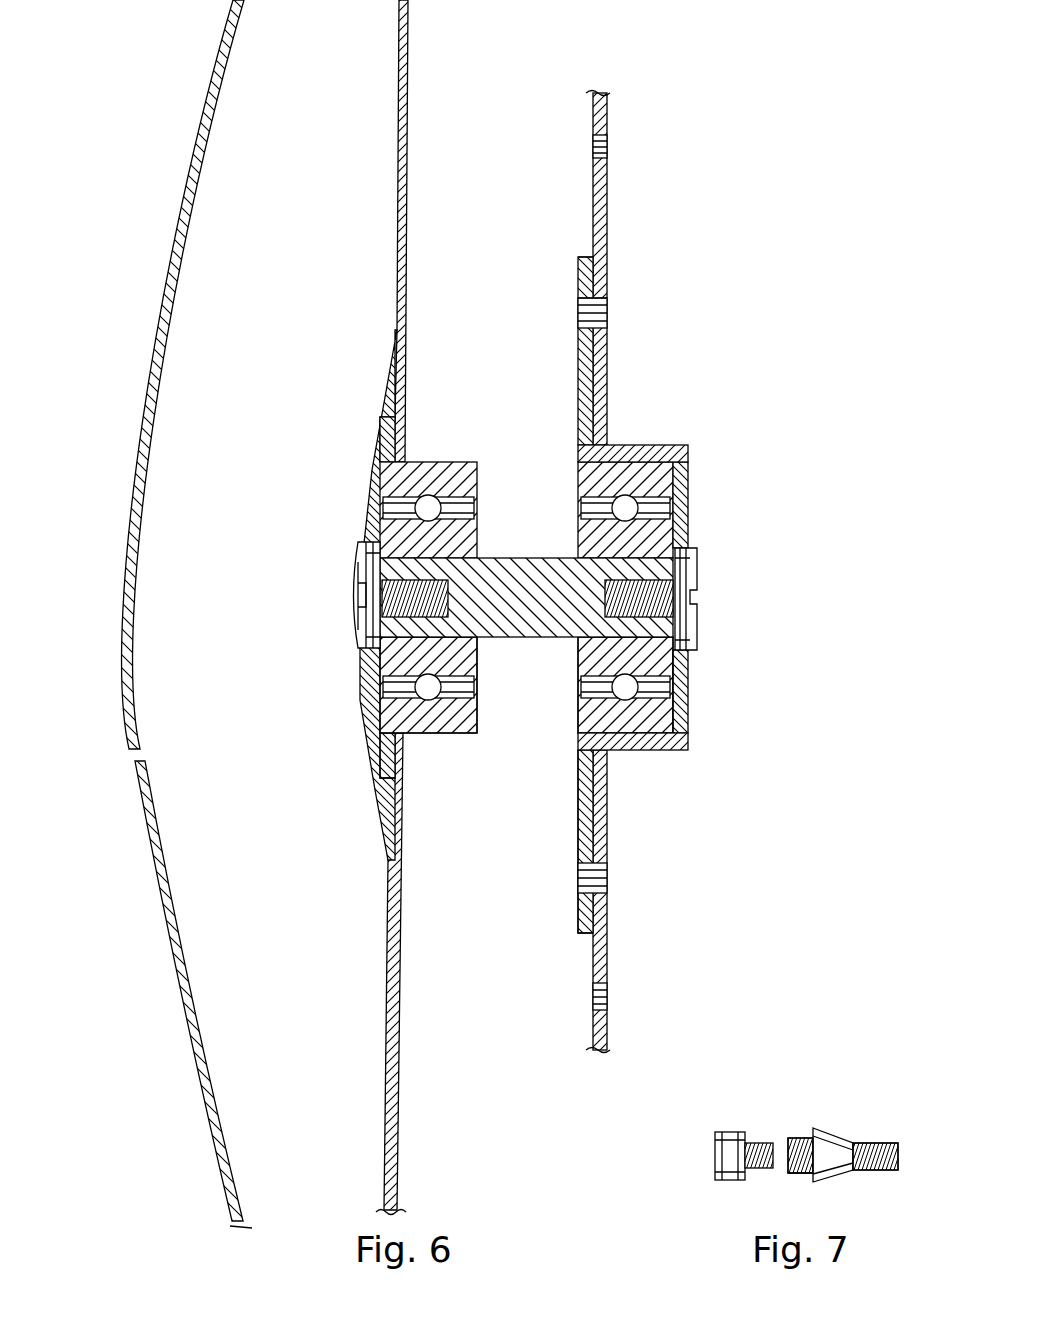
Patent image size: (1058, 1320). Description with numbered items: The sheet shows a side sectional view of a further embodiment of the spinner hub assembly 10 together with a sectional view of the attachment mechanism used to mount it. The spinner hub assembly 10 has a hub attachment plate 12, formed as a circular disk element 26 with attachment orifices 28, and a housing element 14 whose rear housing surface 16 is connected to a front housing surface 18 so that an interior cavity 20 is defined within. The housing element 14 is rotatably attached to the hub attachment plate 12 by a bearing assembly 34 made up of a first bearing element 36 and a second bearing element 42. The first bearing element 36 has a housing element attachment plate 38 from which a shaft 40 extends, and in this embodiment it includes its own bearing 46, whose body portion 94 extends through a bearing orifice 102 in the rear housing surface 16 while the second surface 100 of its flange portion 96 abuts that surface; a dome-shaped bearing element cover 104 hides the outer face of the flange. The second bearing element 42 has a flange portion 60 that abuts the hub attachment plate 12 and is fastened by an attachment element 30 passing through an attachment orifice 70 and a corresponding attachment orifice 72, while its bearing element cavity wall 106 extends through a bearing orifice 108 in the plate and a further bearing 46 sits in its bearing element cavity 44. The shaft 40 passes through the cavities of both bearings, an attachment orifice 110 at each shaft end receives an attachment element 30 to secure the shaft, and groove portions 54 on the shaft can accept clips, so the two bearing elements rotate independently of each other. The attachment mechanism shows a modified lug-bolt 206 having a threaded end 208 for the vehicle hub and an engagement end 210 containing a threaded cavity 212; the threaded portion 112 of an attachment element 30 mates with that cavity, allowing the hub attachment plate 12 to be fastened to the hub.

In FIG. 6, the spinner hub assembly 10 is at (748, 250).
In FIG. 6, the hub attachment plate 12 is at (692, 400).
In FIG. 6, the housing element 14 is at (408, 1090).
In FIG. 6, the rear housing surface 16 is at (405, 250).
In FIG. 6, the front housing surface 18 is at (152, 372).
In FIG. 6, the interior cavity 20 is at (270, 922).
In FIG. 6, the circular disk element 26 is at (608, 242).
In FIG. 6, the attachment orifice 28 is at (607, 152).
In FIG. 6, the attachment element 30 is at (358, 600).
In FIG. 7, the attachment element 30 is at (742, 1183).
In FIG. 6, the bearing assembly 34 is at (474, 834).
In FIG. 6, the first bearing element 36 is at (352, 780).
In FIG. 6, the housing element attachment plate 38 is at (380, 425).
In FIG. 6, the shaft 40 is at (365, 673).
In FIG. 6, the second bearing element 42 is at (718, 712).
In FIG. 6, the bearing element cavity 44 is at (660, 750).
In FIG. 6, the bearing 46 is at (482, 462).
In FIG. 6, the groove portion 54 is at (545, 556).
In FIG. 6, the flange portion 60 is at (580, 385).
In FIG. 6, the attachment orifice 70 is at (581, 312).
In FIG. 6, the attachment orifice 72 is at (601, 312).
In FIG. 6, the body portion 94 is at (477, 716).
In FIG. 6, the flange portion 96 is at (410, 762).
In FIG. 6, the second surface 100 is at (398, 432).
In FIG. 6, the bearing orifice 102 is at (377, 722).
In FIG. 6, the bearing element cover 104 is at (363, 692).
In FIG. 6, the bearing element cavity wall 106 is at (638, 455).
In FIG. 6, the bearing orifice 108 is at (610, 770).
In FIG. 6, the attachment orifice 110 is at (370, 565).
In FIG. 7, the threaded portion 112 is at (755, 1143).
In FIG. 7, the lug-bolt 206 is at (838, 1118).
In FIG. 7, the threaded end 208 is at (865, 1143).
In FIG. 7, the engagement end 210 is at (800, 1180).
In FIG. 7, the threaded cavity 212 is at (806, 1138).